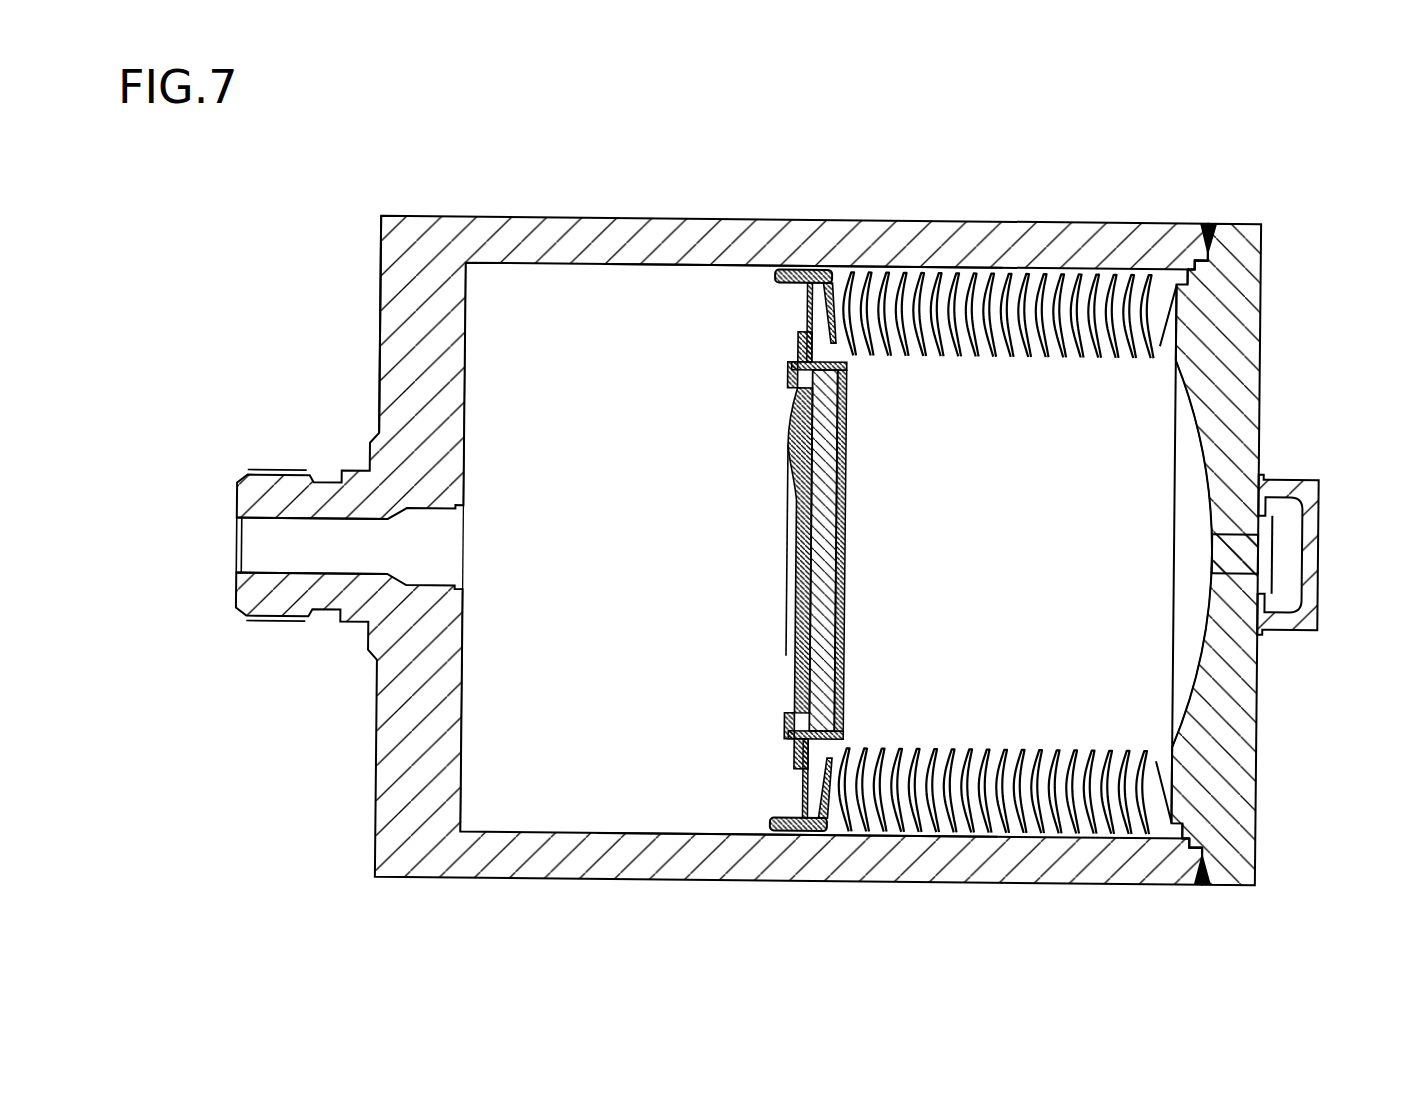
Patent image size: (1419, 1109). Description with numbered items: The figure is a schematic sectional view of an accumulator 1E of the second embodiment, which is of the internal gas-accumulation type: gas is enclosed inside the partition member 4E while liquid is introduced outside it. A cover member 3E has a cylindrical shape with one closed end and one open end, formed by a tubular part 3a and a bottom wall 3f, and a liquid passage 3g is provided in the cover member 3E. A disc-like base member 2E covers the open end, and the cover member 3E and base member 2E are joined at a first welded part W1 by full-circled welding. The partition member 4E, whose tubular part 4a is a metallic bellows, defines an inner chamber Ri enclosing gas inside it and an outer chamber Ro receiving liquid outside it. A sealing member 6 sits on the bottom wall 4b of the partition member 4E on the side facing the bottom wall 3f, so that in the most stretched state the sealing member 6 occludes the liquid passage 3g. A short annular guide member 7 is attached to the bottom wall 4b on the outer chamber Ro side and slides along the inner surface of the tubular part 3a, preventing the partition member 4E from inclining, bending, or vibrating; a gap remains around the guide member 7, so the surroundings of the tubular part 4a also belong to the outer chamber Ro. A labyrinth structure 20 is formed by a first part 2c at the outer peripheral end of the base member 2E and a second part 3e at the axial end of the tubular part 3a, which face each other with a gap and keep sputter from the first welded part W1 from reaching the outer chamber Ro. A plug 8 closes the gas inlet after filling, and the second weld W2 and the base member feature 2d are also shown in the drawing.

The accumulator 1E is at (980, 137).
The cover member 3E is at (869, 219).
The tubular part 3a is at (933, 236).
The second part 3e is at (1176, 262).
The bottom wall 3f is at (396, 352).
The liquid passage 3g is at (277, 555).
The base member 2E is at (1265, 411).
The first part 2c is at (1203, 265).
The cover hole 2d is at (1262, 541).
The labyrinth structure 20 is at (1202, 275).
The plug 8 is at (1265, 556).
The first welded part W1 is at (1204, 219).
The inner weld W2 is at (1182, 266).
The partition member 4E is at (926, 556).
The tubular part 4a is at (995, 264).
The bottom wall 4b is at (832, 672).
The sealing member 6 is at (799, 660).
The guide member 7 is at (806, 270).
The inner chamber Ri is at (1100, 653).
The outer chamber Ro is at (611, 782).